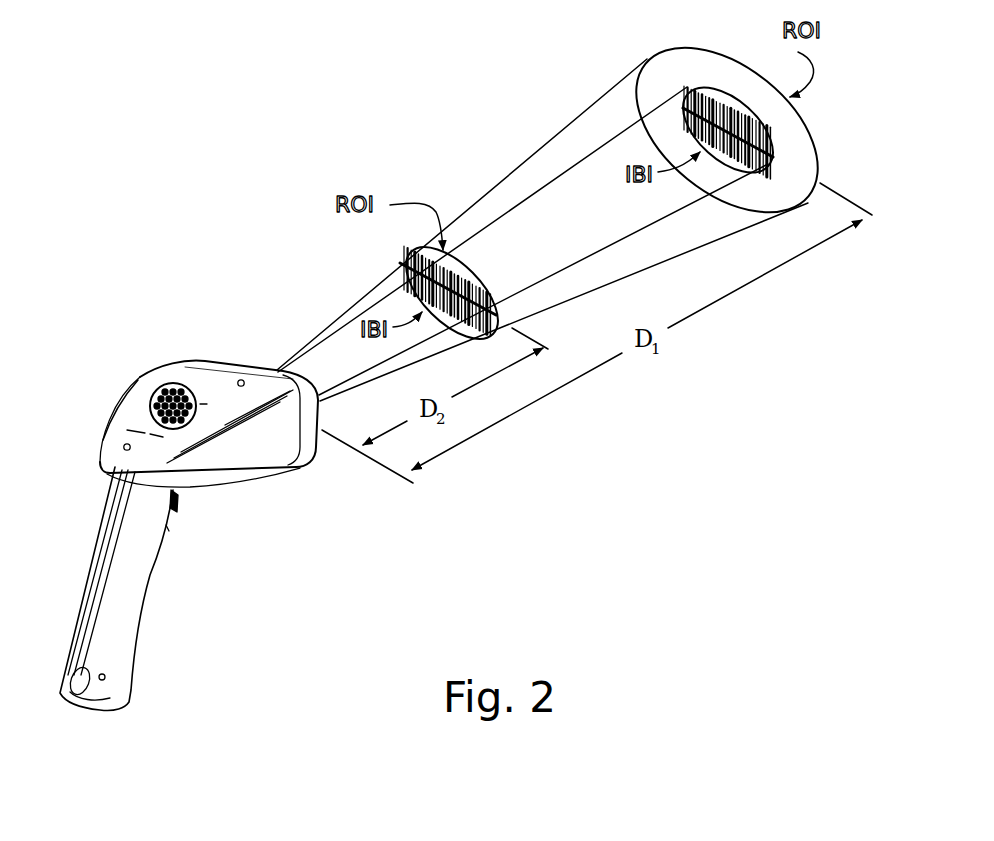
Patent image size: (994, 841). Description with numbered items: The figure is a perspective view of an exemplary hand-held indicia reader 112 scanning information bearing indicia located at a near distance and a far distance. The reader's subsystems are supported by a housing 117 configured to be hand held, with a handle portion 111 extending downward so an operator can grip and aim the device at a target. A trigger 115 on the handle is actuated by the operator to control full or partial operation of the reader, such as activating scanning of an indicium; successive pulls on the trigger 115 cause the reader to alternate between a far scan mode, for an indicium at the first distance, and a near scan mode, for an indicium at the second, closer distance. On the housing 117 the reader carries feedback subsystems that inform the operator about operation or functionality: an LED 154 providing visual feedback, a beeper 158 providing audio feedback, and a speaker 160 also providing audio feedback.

The handle portion 111 is at (117, 663).
The indicia reader 112 is at (246, 458).
The trigger 115 is at (173, 508).
The housing 117 is at (110, 426).
The LED 154 is at (242, 380).
The beeper 158 is at (124, 444).
The speaker 160 is at (173, 383).